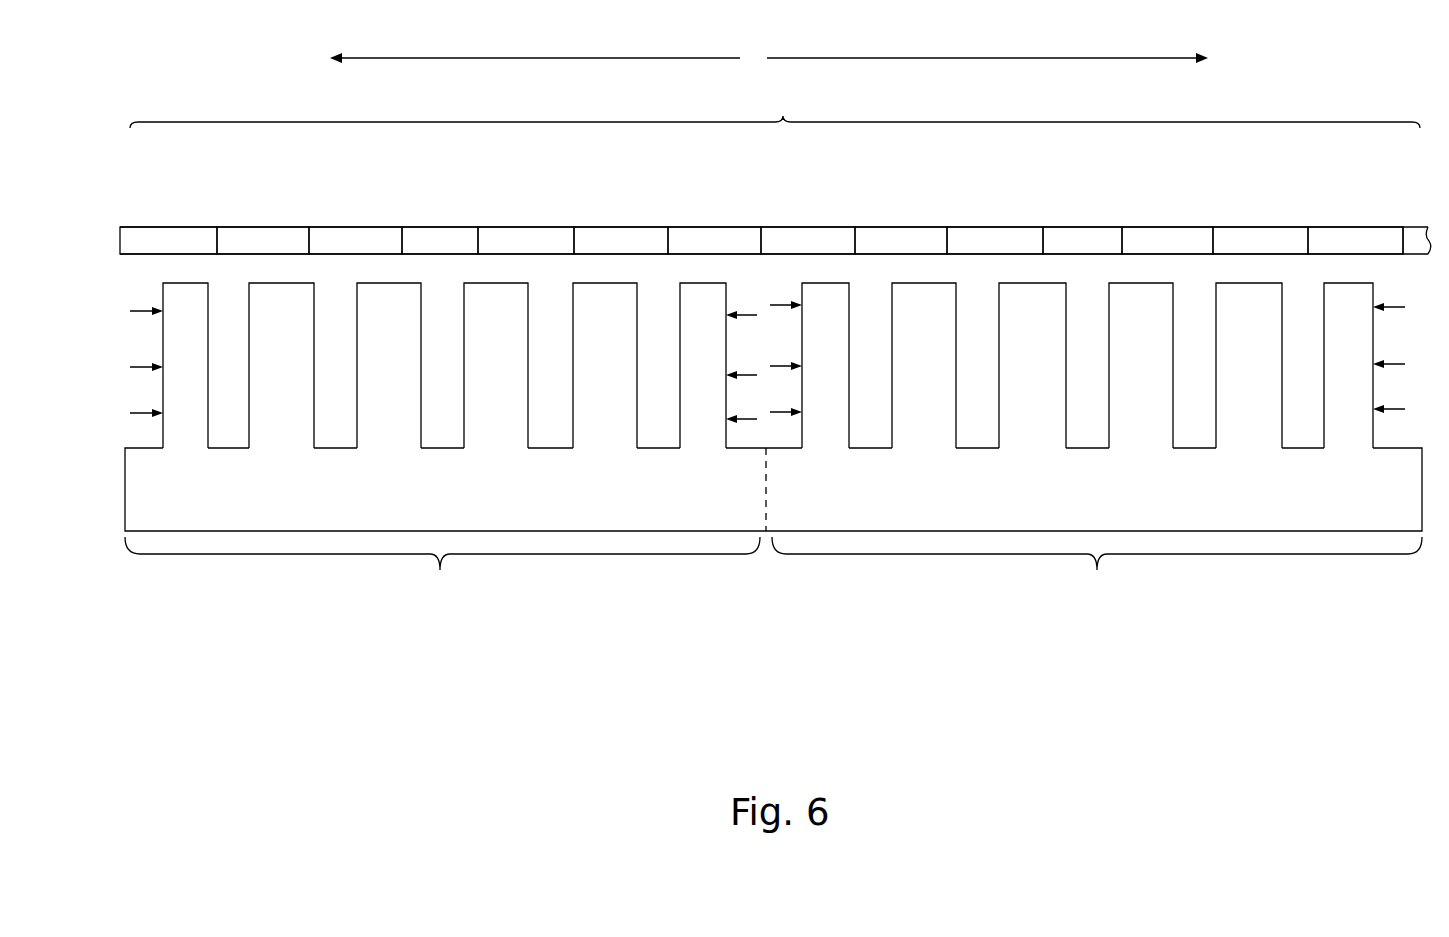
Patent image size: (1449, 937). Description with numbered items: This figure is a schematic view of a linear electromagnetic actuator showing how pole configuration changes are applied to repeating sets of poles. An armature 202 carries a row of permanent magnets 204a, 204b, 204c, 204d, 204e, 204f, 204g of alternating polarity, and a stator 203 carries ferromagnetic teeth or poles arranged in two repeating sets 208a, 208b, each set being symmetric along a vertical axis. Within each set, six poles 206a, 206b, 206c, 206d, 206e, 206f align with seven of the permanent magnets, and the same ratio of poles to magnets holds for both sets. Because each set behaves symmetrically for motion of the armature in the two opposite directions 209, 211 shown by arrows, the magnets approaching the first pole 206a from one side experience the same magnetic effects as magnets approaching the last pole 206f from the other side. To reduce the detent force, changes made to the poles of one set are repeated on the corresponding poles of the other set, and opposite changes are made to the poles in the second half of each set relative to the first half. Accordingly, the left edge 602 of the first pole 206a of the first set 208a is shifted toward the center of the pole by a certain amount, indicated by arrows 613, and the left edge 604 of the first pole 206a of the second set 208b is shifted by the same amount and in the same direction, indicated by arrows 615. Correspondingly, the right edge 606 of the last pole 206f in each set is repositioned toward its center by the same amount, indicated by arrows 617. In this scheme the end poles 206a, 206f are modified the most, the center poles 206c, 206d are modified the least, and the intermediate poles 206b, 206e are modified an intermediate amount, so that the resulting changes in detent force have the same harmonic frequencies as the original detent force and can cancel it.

The armature 202 is at (775, 172).
The stator 203 is at (659, 520).
The permanent magnet 204a is at (163, 227).
The permanent magnet 204b is at (290, 227).
The permanent magnet 204c is at (344, 227).
The permanent magnet 204d is at (466, 227).
The permanent magnet 204e is at (513, 227).
The permanent magnet 204f is at (644, 227).
The permanent magnet 204g is at (703, 227).
The first pole 206a is at (500, 374).
The pole 206b is at (263, 436).
The pole 206c is at (381, 436).
The pole 206d is at (486, 436).
The pole 206e is at (586, 436).
The last pole 206f is at (1034, 379).
The first set of poles 208a is at (445, 529).
The second set of poles 208b is at (1097, 570).
The direction of motion 209 is at (535, 44).
The direction of motion 211 is at (987, 44).
The left edge of first pole 602 is at (163, 293).
The left edge of first pole of second set 604 is at (803, 293).
The right edge of last pole 606 is at (726, 288).
The arrows 613 is at (160, 365).
The arrows 615 is at (795, 306).
The arrows 617 is at (742, 374).